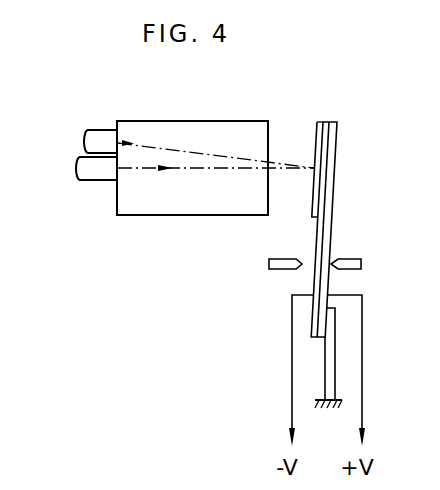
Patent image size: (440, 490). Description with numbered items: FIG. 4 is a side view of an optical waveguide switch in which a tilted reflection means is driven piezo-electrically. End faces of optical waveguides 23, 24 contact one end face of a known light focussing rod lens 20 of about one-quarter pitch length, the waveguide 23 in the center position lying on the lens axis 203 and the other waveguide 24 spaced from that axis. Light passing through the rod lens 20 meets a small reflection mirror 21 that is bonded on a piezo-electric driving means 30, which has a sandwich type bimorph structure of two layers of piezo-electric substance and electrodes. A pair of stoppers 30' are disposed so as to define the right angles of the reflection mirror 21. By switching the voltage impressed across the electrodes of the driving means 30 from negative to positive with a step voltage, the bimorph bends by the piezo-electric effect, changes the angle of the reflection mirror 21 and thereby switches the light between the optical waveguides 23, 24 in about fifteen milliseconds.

The light focussing rod lens 20 is at (188, 140).
The lens axis 203 is at (185, 170).
The optical waveguide 24 is at (98, 141).
The optical waveguide 23 is at (92, 170).
The reflection mirror 21 is at (321, 122).
The piezo-electric driving means 30 is at (342, 210).
The stoppers 30' is at (317, 269).